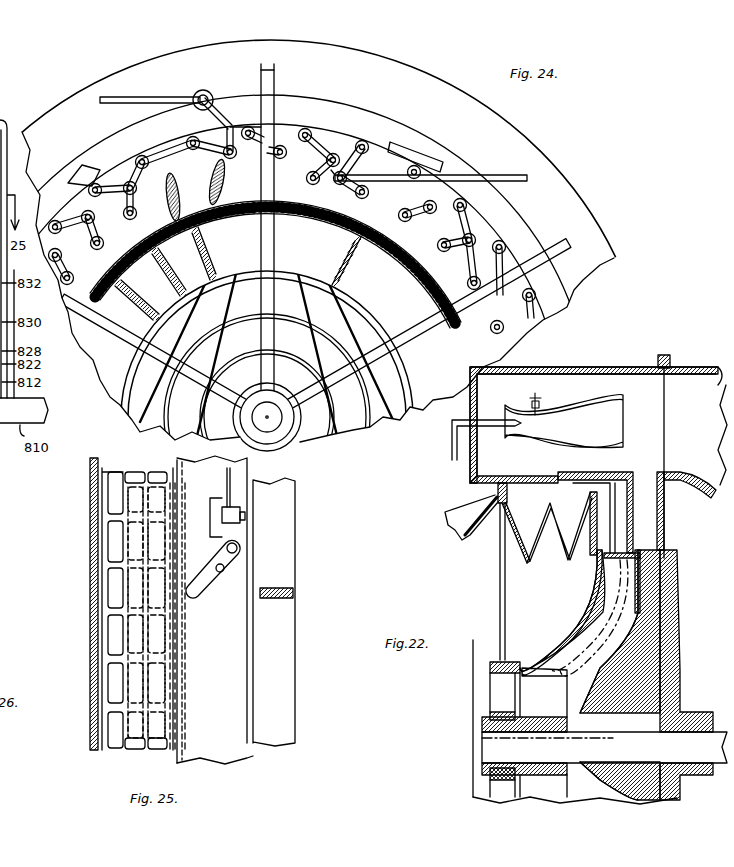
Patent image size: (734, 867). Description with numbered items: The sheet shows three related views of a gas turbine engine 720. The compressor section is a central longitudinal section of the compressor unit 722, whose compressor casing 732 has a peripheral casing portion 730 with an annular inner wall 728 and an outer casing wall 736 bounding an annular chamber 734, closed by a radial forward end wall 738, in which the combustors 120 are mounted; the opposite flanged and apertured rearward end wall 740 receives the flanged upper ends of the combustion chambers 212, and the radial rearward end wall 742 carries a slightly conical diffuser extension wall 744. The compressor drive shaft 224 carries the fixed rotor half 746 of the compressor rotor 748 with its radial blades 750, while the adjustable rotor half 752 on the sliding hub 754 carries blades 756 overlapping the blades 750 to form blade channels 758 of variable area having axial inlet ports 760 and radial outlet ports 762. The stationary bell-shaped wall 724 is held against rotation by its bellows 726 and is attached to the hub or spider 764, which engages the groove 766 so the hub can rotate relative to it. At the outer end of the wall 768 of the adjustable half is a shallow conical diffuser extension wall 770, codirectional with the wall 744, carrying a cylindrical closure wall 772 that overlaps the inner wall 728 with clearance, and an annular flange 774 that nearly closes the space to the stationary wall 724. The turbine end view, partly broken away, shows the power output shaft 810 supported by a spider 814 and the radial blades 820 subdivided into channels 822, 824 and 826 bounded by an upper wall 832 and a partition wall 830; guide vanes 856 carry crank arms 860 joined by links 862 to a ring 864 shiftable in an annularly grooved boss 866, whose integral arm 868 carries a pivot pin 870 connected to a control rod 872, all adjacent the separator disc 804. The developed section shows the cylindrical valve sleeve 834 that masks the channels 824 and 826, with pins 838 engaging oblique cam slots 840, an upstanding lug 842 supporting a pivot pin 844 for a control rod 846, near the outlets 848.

In FIG. 24, the power output shaft 810 is at (267, 430).
In FIG. 24, the spider 814 is at (276, 100).
In FIG. 24, the radial blades 820 is at (320, 360).
In FIG. 25, the radial blades 820 is at (138, 748).
In FIG. 24, the blade channel 822 is at (238, 413).
In FIG. 25, the blade channel 822 is at (110, 548).
In FIG. 24, the blade channel 824 is at (238, 332).
In FIG. 25, the blade channel 824 is at (135, 472).
In FIG. 24, the blade channel 826 is at (230, 244).
In FIG. 25, the blade channel 826 is at (158, 470).
In FIG. 24, the partition wall 830 is at (340, 320).
In FIG. 25, the partition wall 830 is at (175, 680).
In FIG. 24, the upper wall 832 is at (385, 283).
In FIG. 25, the upper wall 832 is at (175, 637).
In FIG. 25, the cylindrical valve sleeve 834 is at (255, 637).
In FIG. 25, the upstanding pins 838 is at (238, 550).
In FIG. 25, the oblique cam slots 840 is at (225, 568).
In FIG. 25, the upstanding lug 842 is at (243, 530).
In FIG. 25, the pivot pin 844 is at (240, 504).
In FIG. 24, the control rod 846 is at (505, 175).
In FIG. 25, the control rod 846 is at (232, 471).
In FIG. 25, the outlets 848 is at (290, 598).
In FIG. 24, the guide vanes 856 is at (170, 146).
In FIG. 24, the crank arms 860 is at (456, 250).
In FIG. 24, the links 862 is at (316, 128).
In FIG. 24, the ring 864 is at (340, 134).
In FIG. 24, the annularly grooved boss 866 is at (76, 179).
In FIG. 24, the integral arm 868 is at (232, 100).
In FIG. 24, the pivot pin 870 is at (200, 90).
In FIG. 24, the control rod 872 is at (150, 86).
In FIG. 25, the flanged separator disc 804 is at (90, 598).
In FIG. 22, the combustors 120 is at (643, 424).
In FIG. 22, the combustion chambers 212 is at (718, 372).
In FIG. 22, the compressor drive shaft 224 is at (617, 743).
In FIG. 22, the gas turbine engine 720 is at (702, 358).
In FIG. 22, the compressor unit 722 is at (584, 359).
In FIG. 22, the bell-shaped wall 724 is at (582, 596).
In FIG. 22, the bellows 726 is at (515, 548).
In FIG. 22, the annular inner wall 728 is at (470, 481).
In FIG. 22, the peripheral casing portion 730 is at (475, 395).
In FIG. 22, the compressor casing 732 is at (689, 557).
In FIG. 22, the annular chamber 734 is at (487, 408).
In FIG. 22, the outer casing wall 736 is at (536, 368).
In FIG. 22, the radial forward end wall 738 is at (465, 462).
In FIG. 22, the rearward end wall 740 is at (660, 358).
In FIG. 22, the radial rearward end wall 742 is at (665, 622).
In FIG. 22, the diffuser extension wall 744 is at (665, 512).
In FIG. 22, the fixed rotor half 746 is at (645, 692).
In FIG. 22, the compressor rotor 748 is at (672, 660).
In FIG. 22, the radial blades 750 is at (650, 580).
In FIG. 22, the adjustable rotor half 752 is at (642, 643).
In FIG. 22, the sliding hub 754 is at (482, 720).
In FIG. 22, the blades 756 is at (590, 622).
In FIG. 22, the blade channels 758 is at (650, 592).
In FIG. 22, the axial inlet ports 760 is at (558, 692).
In FIG. 22, the radial outlet ports 762 is at (655, 540).
In FIG. 22, the hub or spider 764 is at (490, 670).
In FIG. 22, the groove 766 is at (480, 765).
In FIG. 22, the wall 768 is at (640, 600).
In FIG. 22, the diffuser extension wall 770 is at (625, 485).
In FIG. 22, the cylindrical closure wall 772 is at (573, 473).
In FIG. 22, the annular flange 774 is at (605, 556).